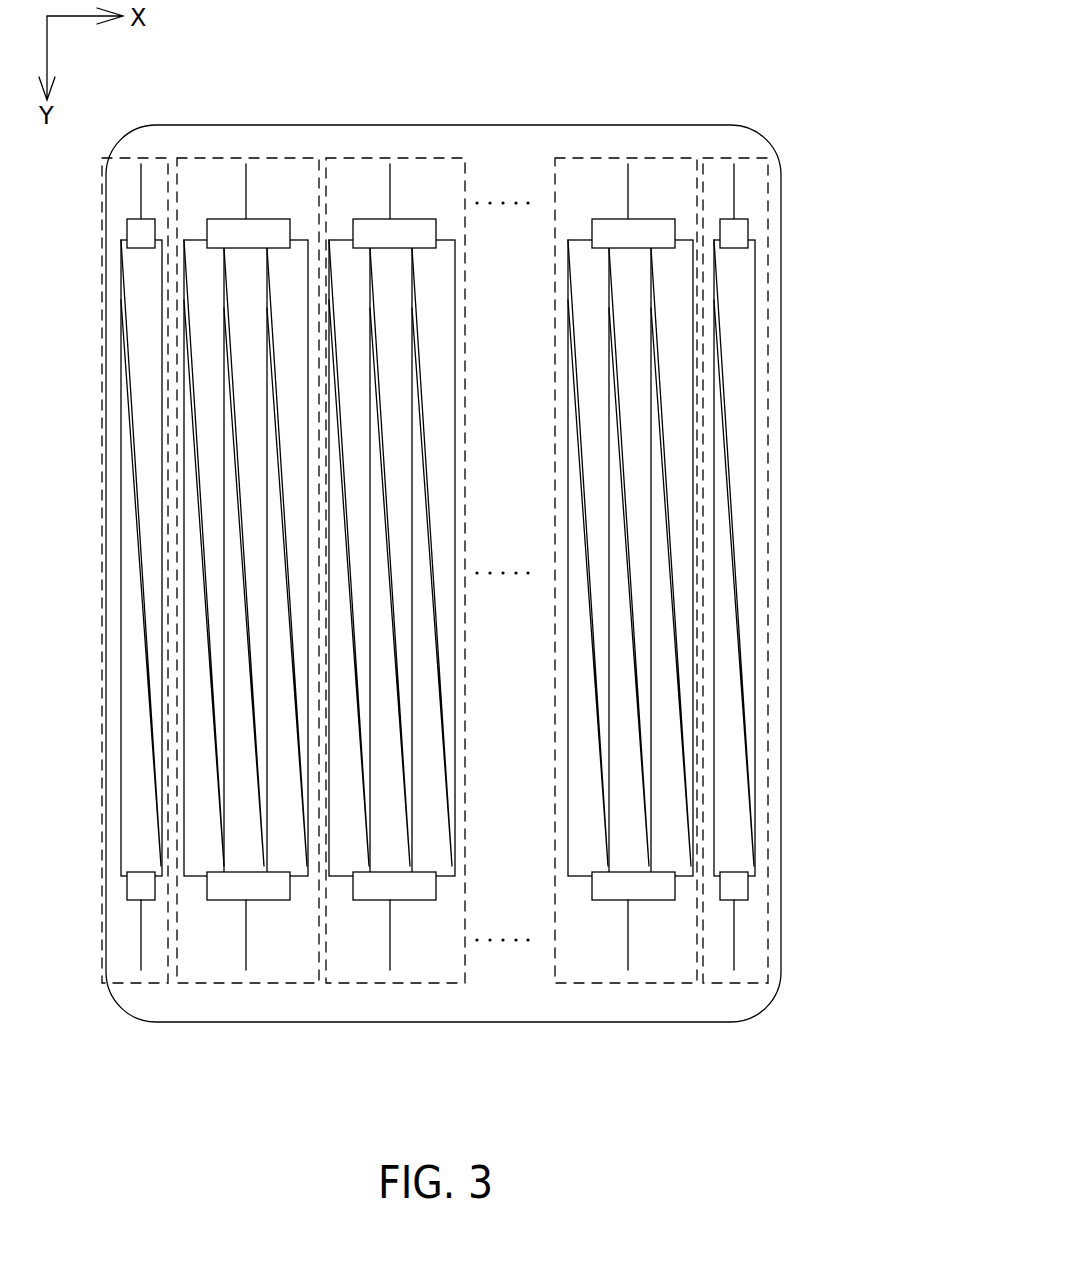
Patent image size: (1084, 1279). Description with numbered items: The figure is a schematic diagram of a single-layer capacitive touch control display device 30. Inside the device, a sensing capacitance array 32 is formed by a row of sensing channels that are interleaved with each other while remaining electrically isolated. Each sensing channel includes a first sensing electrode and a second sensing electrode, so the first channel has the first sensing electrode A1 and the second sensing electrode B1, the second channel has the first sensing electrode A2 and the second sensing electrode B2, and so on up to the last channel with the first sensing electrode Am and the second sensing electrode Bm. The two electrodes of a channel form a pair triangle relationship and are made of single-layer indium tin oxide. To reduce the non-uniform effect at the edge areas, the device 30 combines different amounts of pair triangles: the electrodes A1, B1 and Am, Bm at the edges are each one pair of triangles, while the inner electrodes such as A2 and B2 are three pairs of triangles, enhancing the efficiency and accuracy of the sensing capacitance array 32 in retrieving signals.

The single-layer capacitive touch control display device 30 is at (645, 61).
The sensing capacitance array 32 is at (813, 1067).
The first sensing electrode A1 is at (169, 226).
The first sensing electrode A2 is at (309, 226).
The first sensing electrode Am is at (700, 226).
The second sensing electrode B1 is at (169, 891).
The second sensing electrode B2 is at (307, 892).
The second sensing electrode Bm is at (701, 898).